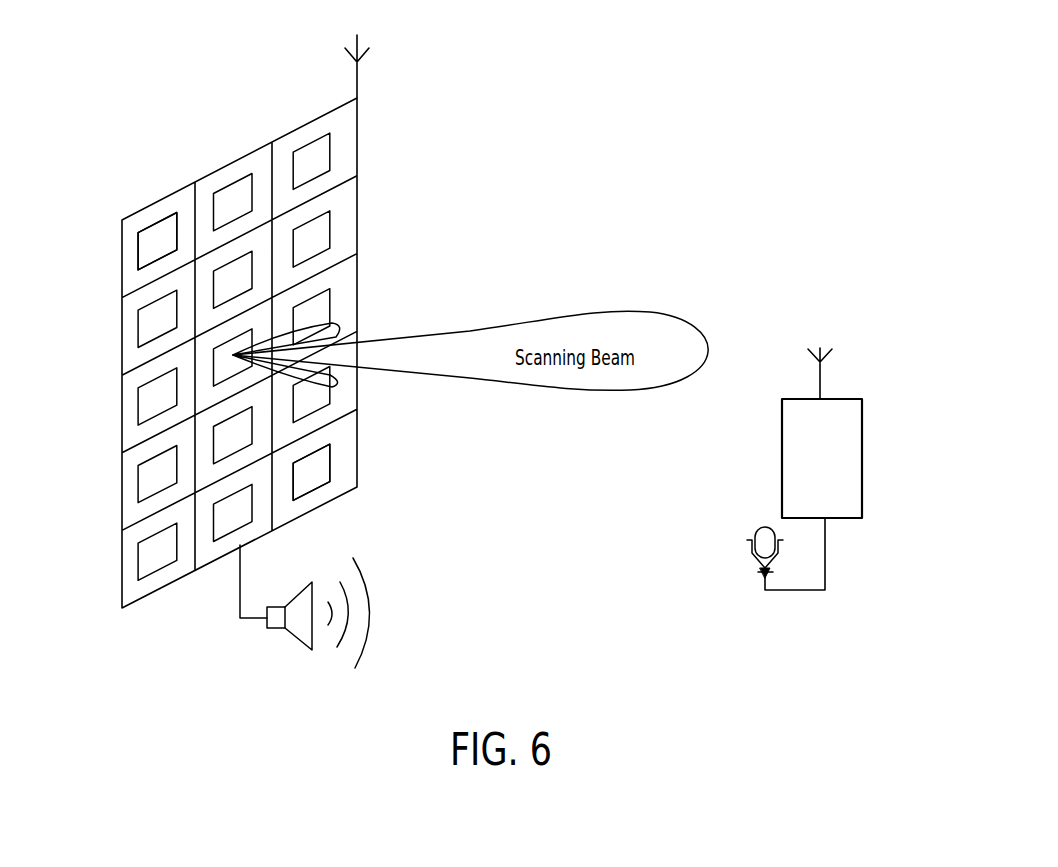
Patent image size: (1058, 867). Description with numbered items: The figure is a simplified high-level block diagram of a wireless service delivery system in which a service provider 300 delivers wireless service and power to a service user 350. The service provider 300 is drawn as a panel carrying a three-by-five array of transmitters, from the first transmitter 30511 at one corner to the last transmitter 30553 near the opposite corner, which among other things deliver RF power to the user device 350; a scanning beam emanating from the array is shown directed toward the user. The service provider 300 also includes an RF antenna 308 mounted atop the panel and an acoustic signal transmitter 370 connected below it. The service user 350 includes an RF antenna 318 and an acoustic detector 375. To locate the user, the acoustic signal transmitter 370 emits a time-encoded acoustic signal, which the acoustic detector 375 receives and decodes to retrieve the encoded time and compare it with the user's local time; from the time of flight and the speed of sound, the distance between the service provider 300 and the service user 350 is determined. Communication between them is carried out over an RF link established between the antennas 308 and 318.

The service provider 300 is at (212, 174).
The transmitter 30511 is at (140, 252).
The transmitter 30553 is at (332, 457).
The RF antenna 308 is at (368, 52).
The acoustic signal transmitter 370 is at (300, 640).
The RF antenna 318 is at (828, 353).
The service user 350 is at (863, 460).
The acoustic detector 375 is at (750, 550).